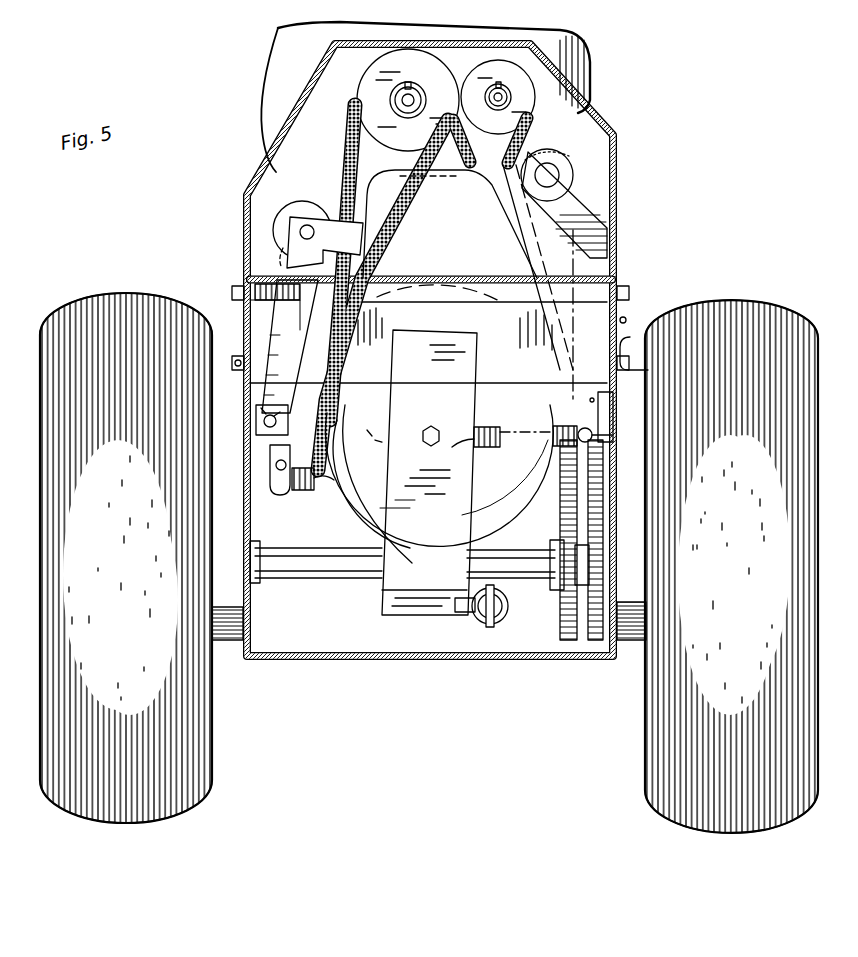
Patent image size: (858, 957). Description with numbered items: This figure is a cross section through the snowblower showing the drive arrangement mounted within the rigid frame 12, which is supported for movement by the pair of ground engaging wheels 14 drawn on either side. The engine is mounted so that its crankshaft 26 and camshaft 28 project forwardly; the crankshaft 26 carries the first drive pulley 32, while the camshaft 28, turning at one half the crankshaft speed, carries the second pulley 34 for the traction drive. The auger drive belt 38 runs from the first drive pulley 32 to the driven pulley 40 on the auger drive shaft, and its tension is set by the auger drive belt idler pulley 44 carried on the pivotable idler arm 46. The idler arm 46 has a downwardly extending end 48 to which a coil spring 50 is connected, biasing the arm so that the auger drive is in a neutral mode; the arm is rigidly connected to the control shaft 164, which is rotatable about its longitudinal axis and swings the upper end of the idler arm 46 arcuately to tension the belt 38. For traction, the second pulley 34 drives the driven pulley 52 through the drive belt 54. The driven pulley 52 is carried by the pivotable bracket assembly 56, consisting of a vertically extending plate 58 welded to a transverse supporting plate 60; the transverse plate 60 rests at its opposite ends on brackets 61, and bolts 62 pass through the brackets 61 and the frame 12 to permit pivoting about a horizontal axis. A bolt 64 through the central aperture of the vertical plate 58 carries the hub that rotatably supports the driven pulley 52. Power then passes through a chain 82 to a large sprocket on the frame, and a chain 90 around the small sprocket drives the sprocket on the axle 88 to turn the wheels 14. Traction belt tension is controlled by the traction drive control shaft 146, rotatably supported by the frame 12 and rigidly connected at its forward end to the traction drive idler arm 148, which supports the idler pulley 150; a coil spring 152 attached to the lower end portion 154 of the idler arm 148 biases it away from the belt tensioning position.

The rigid frame 12 is at (647, 300).
The ground engaging wheels 14 is at (117, 293).
The crankshaft 26 is at (395, 97).
The camshaft 28 is at (512, 97).
The first drive pulley 32 is at (410, 57).
The second pulley 34 is at (507, 67).
The drive belt 38 is at (343, 163).
The driven pulley 40 is at (348, 520).
The auger drive belt idler pulley 44 is at (272, 228).
The idler arm 46 is at (245, 306).
The downwardly extending end 48 is at (284, 490).
The coil spring 50 is at (303, 493).
The driven pulley 52 is at (481, 517).
The drive belt 54 is at (523, 263).
The pivotable bracket assembly 56 is at (369, 597).
The vertically extending plate 58 is at (443, 483).
The transverse supporting plate 60 is at (440, 322).
The brackets 61 is at (243, 338).
The bolts 62 is at (335, 372).
The bolt 64 is at (431, 426).
The chain 82 is at (560, 609).
The axle 88 is at (303, 562).
The chain 90 is at (583, 657).
The traction drive control shaft 146 is at (613, 405).
The traction drive idler arm 148 is at (580, 213).
The idler pulley 150 is at (573, 157).
The coil spring 152 is at (497, 434).
The lower end portion 154 is at (613, 427).
The control shaft 164 is at (245, 403).